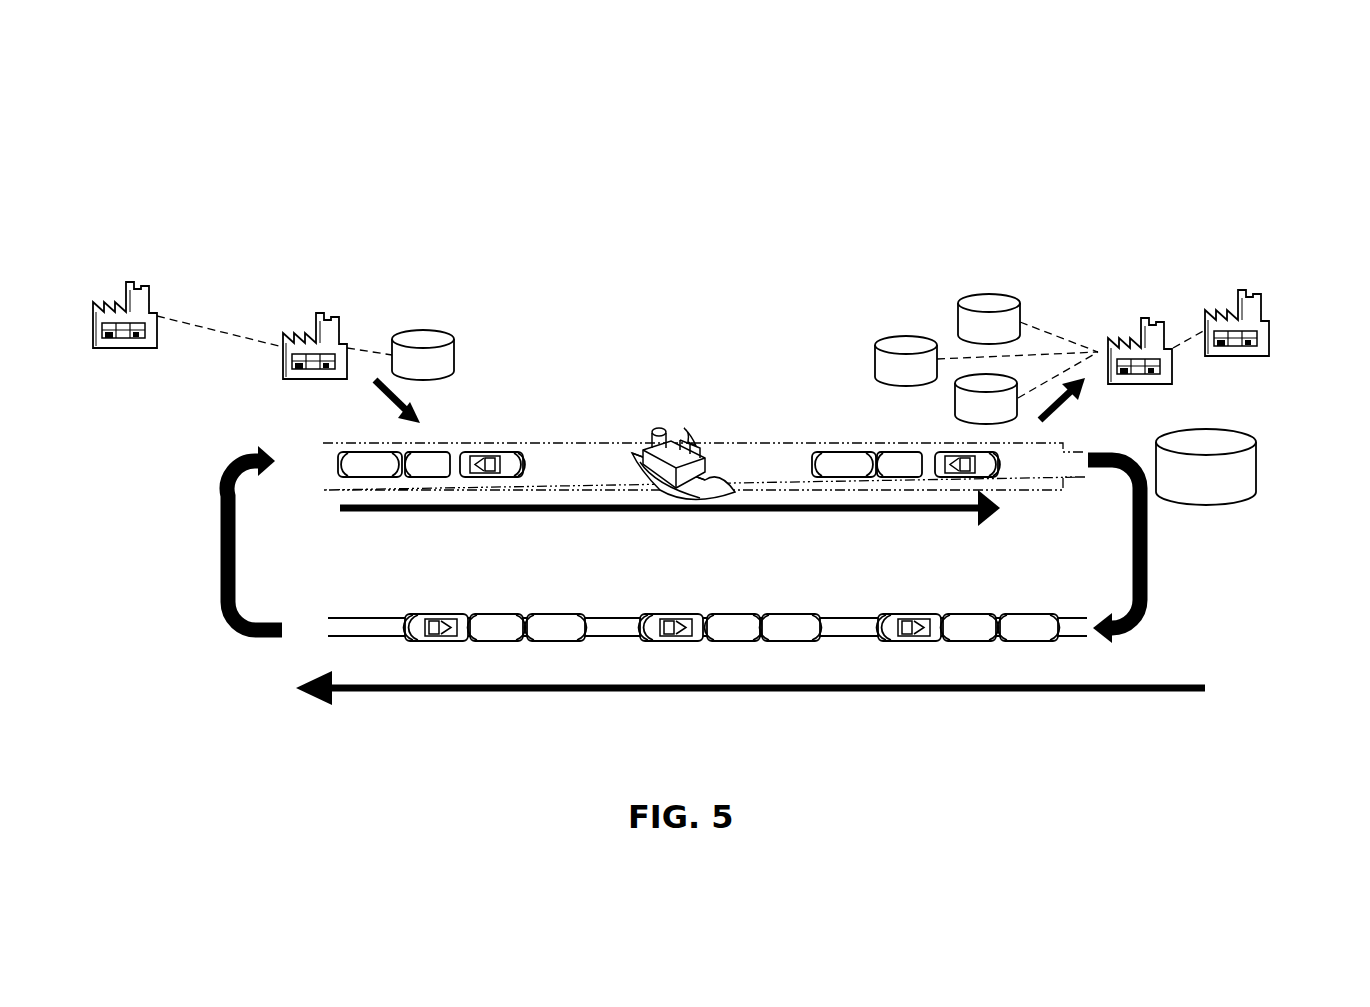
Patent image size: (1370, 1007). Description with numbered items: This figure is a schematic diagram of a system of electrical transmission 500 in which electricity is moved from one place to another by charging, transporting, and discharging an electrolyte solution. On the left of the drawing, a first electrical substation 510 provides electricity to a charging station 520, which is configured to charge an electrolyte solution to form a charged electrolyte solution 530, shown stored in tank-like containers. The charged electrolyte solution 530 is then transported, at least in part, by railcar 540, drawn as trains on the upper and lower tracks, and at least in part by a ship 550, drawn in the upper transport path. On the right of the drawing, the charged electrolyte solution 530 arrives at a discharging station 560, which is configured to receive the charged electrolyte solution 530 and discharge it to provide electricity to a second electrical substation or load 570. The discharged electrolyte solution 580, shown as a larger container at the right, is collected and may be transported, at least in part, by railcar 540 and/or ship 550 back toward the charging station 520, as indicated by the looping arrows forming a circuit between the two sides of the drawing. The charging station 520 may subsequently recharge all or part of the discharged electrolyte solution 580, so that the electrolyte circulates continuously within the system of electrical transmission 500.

The system of electrical transmission 500 is at (1088, 138).
The first electrical substation 510 is at (141, 283).
The charging station 520 is at (338, 313).
The charged electrolyte solution 530 is at (448, 331).
The railcar 540 is at (437, 444).
The ship 550 is at (660, 425).
The discharging station 560 is at (1160, 320).
The second electrical substation or load 570 is at (1252, 292).
The discharged electrolyte solution 580 is at (1240, 430).